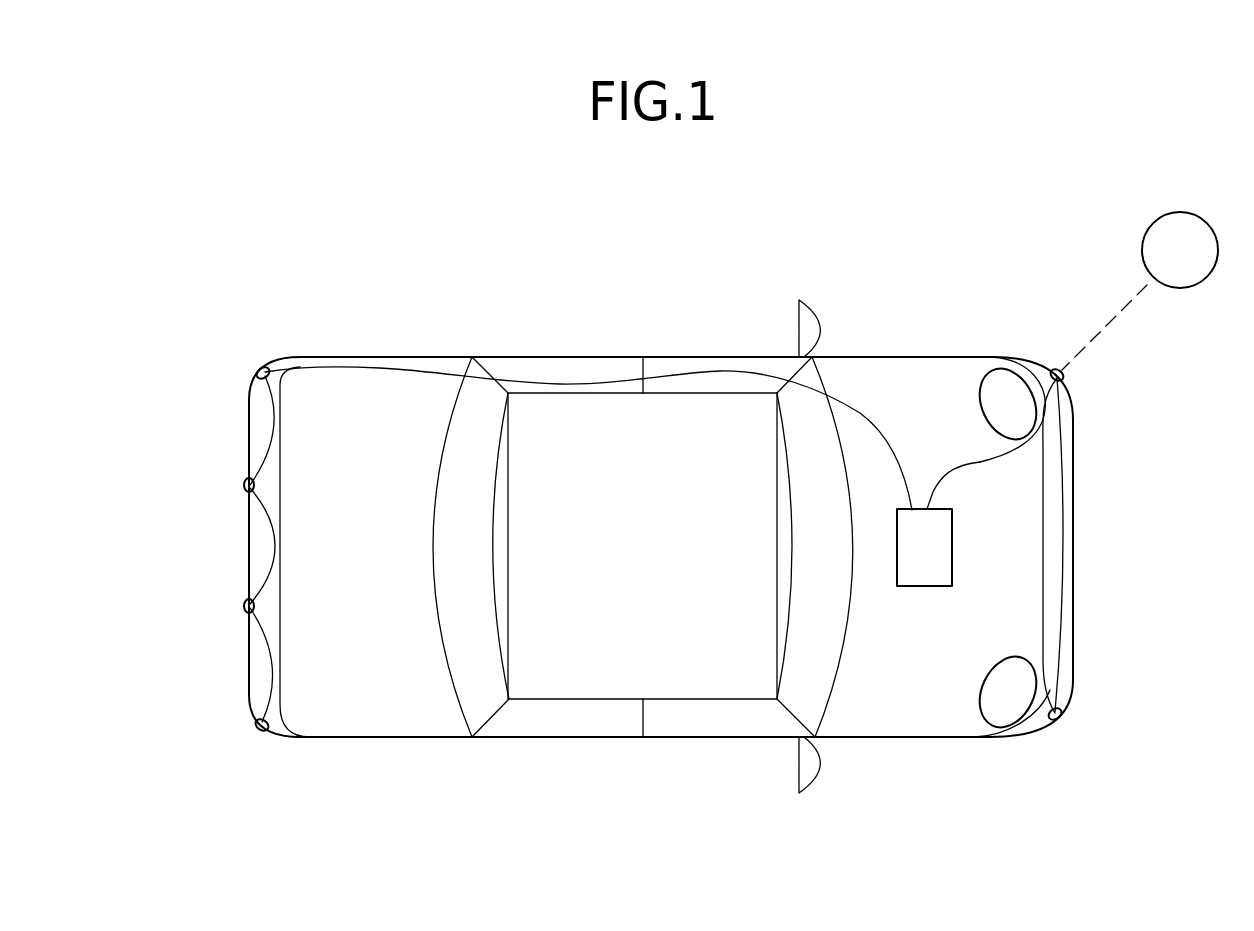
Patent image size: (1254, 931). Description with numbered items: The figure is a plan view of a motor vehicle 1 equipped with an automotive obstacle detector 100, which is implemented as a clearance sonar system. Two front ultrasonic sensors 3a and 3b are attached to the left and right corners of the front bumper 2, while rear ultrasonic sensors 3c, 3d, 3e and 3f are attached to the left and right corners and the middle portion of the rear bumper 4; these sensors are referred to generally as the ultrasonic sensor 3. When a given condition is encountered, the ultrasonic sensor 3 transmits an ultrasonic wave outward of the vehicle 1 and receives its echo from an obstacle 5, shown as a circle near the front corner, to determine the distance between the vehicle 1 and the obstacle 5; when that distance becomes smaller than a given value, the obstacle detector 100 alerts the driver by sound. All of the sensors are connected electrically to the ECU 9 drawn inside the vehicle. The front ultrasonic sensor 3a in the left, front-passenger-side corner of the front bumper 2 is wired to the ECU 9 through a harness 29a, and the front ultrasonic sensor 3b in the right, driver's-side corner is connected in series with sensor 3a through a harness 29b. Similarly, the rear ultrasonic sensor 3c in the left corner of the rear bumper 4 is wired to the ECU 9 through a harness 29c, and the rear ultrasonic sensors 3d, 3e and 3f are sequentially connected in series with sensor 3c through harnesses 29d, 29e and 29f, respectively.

The automotive obstacle detector 100 is at (800, 158).
The motor vehicle 1 is at (595, 738).
The front bumper 2 is at (1073, 607).
The ultrasonic sensor 3 is at (649, 562).
The front ultrasonic sensor 3a is at (1064, 375).
The front ultrasonic sensor 3b is at (1060, 718).
The rear ultrasonic sensor 3c is at (260, 368).
The rear ultrasonic sensor 3d is at (245, 484).
The rear ultrasonic sensor 3e is at (246, 608).
The rear ultrasonic sensor 3f is at (262, 728).
The rear bumper 4 is at (249, 547).
The obstacle 5 is at (1188, 228).
The ECU 9 is at (924, 578).
The harness 29a is at (988, 462).
The harness 29b is at (1058, 553).
The harness 29c is at (370, 368).
The harness 29d is at (276, 440).
The harness 29e is at (268, 555).
The harness 29f is at (268, 663).